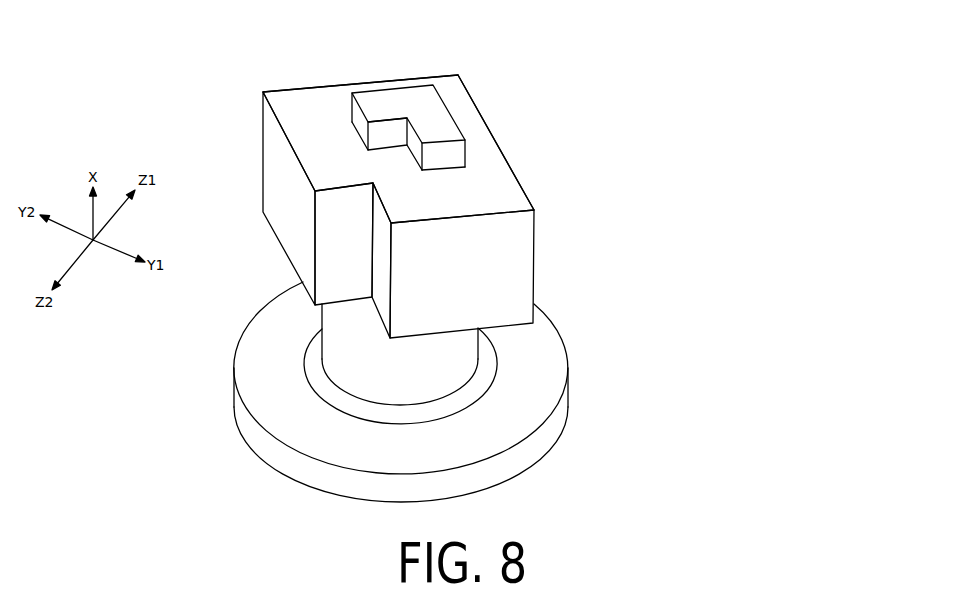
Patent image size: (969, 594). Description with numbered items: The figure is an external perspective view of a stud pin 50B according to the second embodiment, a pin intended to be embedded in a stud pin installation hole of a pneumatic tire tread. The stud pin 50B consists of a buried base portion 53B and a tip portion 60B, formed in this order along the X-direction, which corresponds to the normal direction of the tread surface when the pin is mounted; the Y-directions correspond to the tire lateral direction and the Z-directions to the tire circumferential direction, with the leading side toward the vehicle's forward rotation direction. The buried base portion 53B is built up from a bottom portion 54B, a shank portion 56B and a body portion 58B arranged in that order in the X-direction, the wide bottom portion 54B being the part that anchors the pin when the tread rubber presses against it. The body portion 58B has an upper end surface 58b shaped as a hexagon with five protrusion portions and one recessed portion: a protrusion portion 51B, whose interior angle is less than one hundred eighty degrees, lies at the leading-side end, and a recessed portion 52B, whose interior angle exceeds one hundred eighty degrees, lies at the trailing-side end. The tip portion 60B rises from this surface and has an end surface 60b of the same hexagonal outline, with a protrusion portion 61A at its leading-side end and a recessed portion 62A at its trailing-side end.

The stud pin 50B is at (628, 70).
The protrusion portion 51B is at (468, 69).
The recessed portion 52B is at (358, 223).
The buried base portion 53B is at (633, 265).
The bottom portion 54B is at (538, 394).
The shank portion 56B is at (470, 342).
The body portion 58B is at (498, 278).
The upper end surface 58b is at (492, 175).
The tip portion 60B is at (382, 99).
The end surface 60b is at (437, 113).
The protrusion portion 61A is at (442, 76).
The recessed portion 62A is at (397, 127).